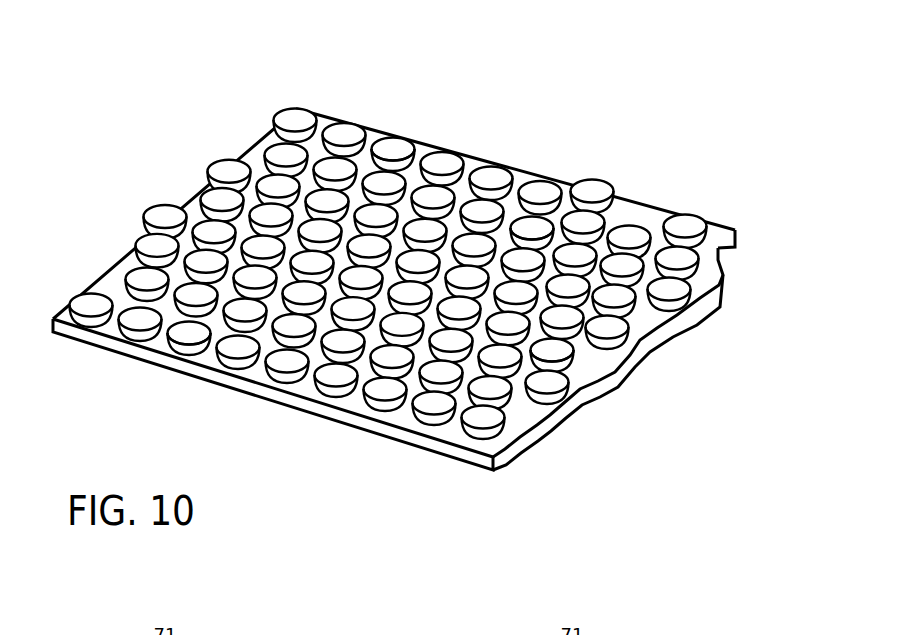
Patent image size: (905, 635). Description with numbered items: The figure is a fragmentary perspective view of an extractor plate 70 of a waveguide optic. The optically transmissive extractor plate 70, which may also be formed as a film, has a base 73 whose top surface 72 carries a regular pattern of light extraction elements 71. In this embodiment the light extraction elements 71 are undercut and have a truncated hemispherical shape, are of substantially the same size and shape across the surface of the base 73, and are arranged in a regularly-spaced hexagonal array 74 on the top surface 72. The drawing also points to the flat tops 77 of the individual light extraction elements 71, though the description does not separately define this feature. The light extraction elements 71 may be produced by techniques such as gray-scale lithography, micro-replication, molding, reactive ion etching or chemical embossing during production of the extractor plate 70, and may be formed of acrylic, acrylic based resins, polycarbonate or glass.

The extractor plate 70 is at (415, 265).
The light extraction elements 71 is at (453, 205).
The top surface 72 is at (643, 210).
The base 73 is at (77, 338).
The hexagonal array 74 is at (388, 265).
The flat top surface of protrusion 77 is at (392, 147).